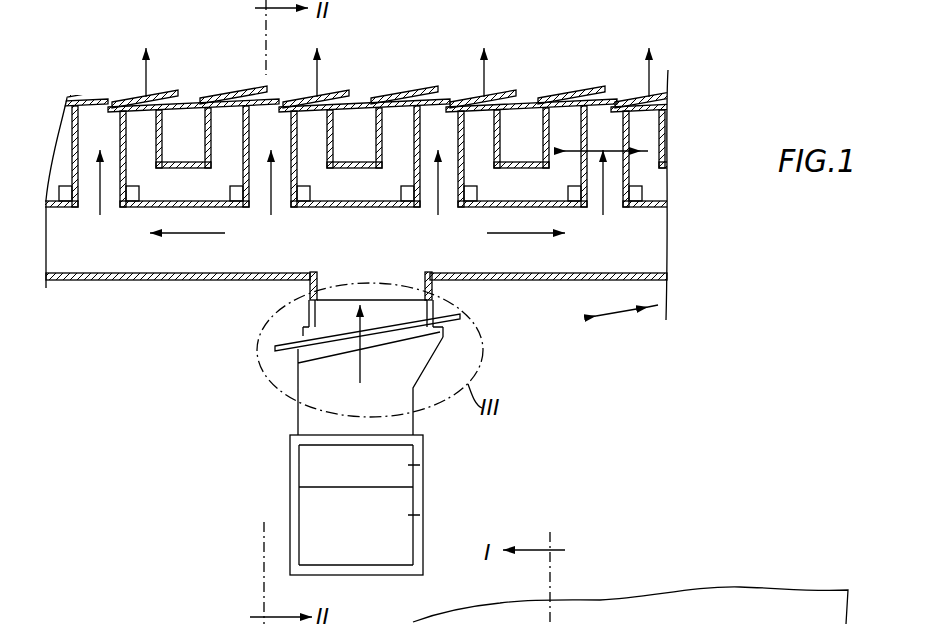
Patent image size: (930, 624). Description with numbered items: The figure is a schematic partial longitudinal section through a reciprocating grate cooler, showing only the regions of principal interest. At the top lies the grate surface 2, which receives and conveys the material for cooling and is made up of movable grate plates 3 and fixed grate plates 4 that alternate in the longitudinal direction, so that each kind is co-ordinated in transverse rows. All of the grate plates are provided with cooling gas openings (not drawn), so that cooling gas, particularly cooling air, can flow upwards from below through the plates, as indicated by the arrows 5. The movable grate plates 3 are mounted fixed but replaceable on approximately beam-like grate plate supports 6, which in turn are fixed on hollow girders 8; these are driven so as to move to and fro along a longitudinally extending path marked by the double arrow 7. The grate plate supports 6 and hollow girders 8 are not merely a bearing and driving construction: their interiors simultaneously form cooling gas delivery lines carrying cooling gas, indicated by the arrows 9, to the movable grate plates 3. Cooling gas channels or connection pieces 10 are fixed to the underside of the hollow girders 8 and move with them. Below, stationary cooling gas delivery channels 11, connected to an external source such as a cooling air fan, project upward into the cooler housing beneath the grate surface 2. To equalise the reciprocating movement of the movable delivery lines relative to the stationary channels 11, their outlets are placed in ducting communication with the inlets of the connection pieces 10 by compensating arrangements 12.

The grate surface 2 is at (519, 78).
The movable grate plates 3 is at (158, 90).
The fixed grate plates 4 is at (226, 93).
The arrows indicating cooling gas flow 5 is at (146, 68).
The grate plate supports 6 is at (76, 163).
The double arrow 7 is at (621, 282).
The hollow girders 8 is at (140, 284).
The arrows indicating cooling gas 9 is at (215, 233).
The cooling gas channels or connection pieces 10 is at (312, 297).
The stationary cooling gas delivery channels 11 is at (417, 515).
The compensating arrangements 12 is at (439, 361).